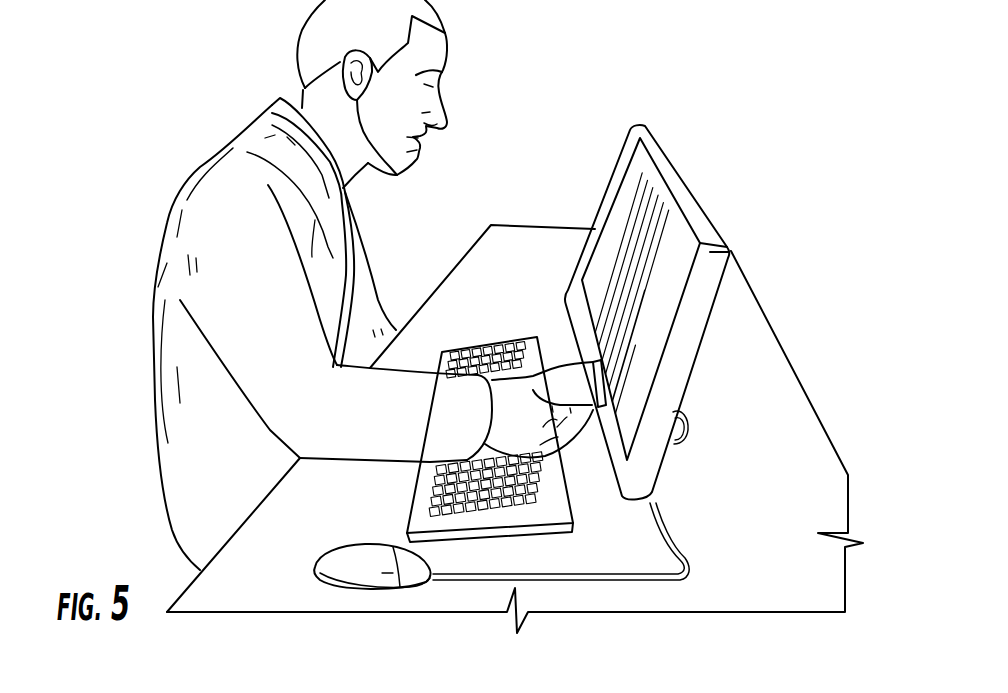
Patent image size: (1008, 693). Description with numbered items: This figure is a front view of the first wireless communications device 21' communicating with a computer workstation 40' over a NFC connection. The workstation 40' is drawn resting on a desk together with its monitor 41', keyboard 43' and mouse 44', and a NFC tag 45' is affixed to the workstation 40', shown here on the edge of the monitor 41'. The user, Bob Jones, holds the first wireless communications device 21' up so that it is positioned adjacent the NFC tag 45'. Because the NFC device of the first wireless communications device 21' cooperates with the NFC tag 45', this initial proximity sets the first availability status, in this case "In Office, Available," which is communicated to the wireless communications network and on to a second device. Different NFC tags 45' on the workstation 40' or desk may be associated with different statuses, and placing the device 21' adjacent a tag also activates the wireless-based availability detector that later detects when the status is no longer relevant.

The workstation 40' is at (515, 335).
The display monitor 41' is at (651, 324).
The keyboard 43' is at (431, 439).
The mouse 44' is at (360, 595).
The NFC tag 45' is at (709, 331).
The first wireless communications device 21' is at (533, 367).